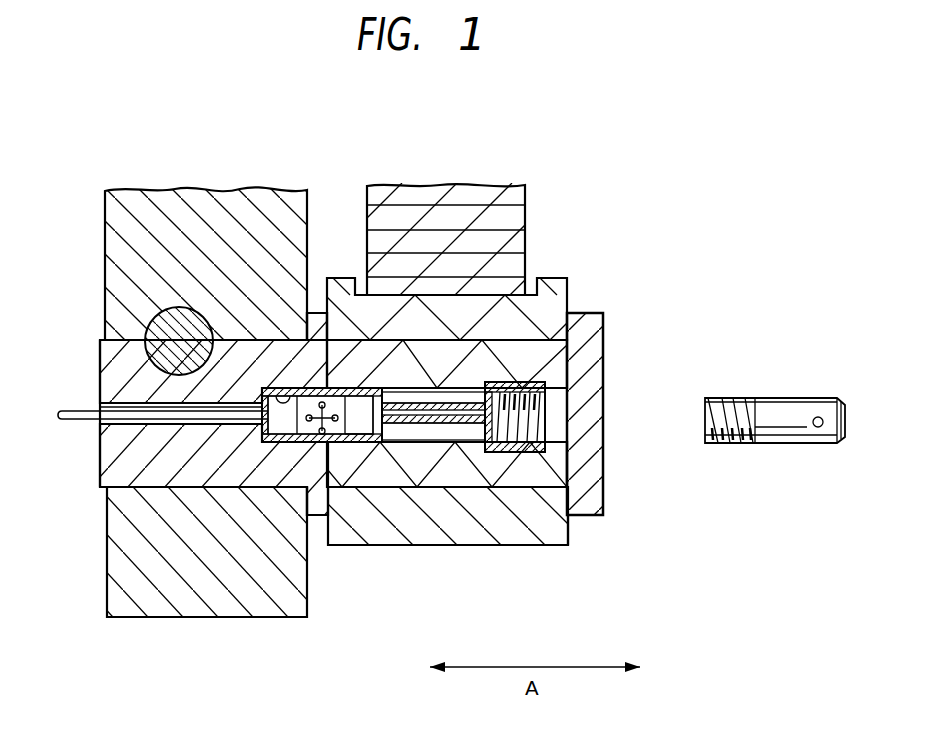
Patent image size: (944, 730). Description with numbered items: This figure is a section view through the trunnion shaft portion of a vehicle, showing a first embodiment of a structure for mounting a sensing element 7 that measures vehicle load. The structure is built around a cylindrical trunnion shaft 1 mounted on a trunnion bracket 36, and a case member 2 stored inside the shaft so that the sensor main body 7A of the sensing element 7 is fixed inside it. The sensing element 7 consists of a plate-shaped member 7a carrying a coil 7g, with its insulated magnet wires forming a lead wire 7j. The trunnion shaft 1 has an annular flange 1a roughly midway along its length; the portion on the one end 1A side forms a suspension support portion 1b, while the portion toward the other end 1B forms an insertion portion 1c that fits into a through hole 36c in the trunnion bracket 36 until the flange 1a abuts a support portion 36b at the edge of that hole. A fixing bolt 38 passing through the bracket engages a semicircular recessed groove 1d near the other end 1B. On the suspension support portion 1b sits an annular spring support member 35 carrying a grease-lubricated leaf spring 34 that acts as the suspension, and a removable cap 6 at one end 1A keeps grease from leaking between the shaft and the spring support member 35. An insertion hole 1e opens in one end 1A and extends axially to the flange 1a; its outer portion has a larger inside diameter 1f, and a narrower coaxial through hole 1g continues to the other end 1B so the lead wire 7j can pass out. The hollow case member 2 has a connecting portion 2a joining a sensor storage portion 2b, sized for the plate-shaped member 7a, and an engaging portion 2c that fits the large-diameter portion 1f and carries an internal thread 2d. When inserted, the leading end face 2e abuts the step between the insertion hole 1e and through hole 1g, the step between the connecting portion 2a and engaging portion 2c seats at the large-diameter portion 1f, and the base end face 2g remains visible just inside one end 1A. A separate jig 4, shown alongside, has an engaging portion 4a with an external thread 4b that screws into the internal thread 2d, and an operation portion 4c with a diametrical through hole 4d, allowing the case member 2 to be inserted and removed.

The trunnion shaft 1 is at (342, 476).
The one end 1A is at (563, 352).
The other end 1B is at (100, 446).
The annular flange 1a is at (322, 516).
The suspension support portion 1b is at (556, 478).
The insertion portion 1c is at (103, 463).
The recessed groove 1d is at (118, 368).
The insertion hole 1e is at (455, 490).
The large-diameter portion 1f is at (556, 466).
The through hole 1g is at (115, 393).
The case member 2 is at (428, 366).
The connecting portion 2a is at (548, 386).
The sensor storage portion 2b is at (318, 440).
The engaging portion 2c is at (527, 470).
The internal thread 2d is at (540, 436).
The leading end face 2e is at (258, 392).
The base end face 2g is at (550, 418).
The jig 4 is at (778, 421).
The engaging portion 4a is at (722, 445).
The external thread 4b is at (750, 445).
The operation portion 4c is at (795, 440).
The through hole 4d is at (820, 432).
The cap 6 is at (587, 311).
The sensing element 7 is at (239, 549).
The sensor main body 7A is at (271, 457).
The plate-shaped member 7a is at (345, 443).
The coil 7g is at (330, 434).
The lead wire 7j is at (231, 418).
The leaf spring 34 is at (520, 262).
The spring support member 35 is at (520, 547).
The trunnion bracket 36 is at (170, 241).
The support portion 36b is at (115, 533).
The through hole 36c is at (125, 350).
The fixing bolt 38 is at (150, 320).